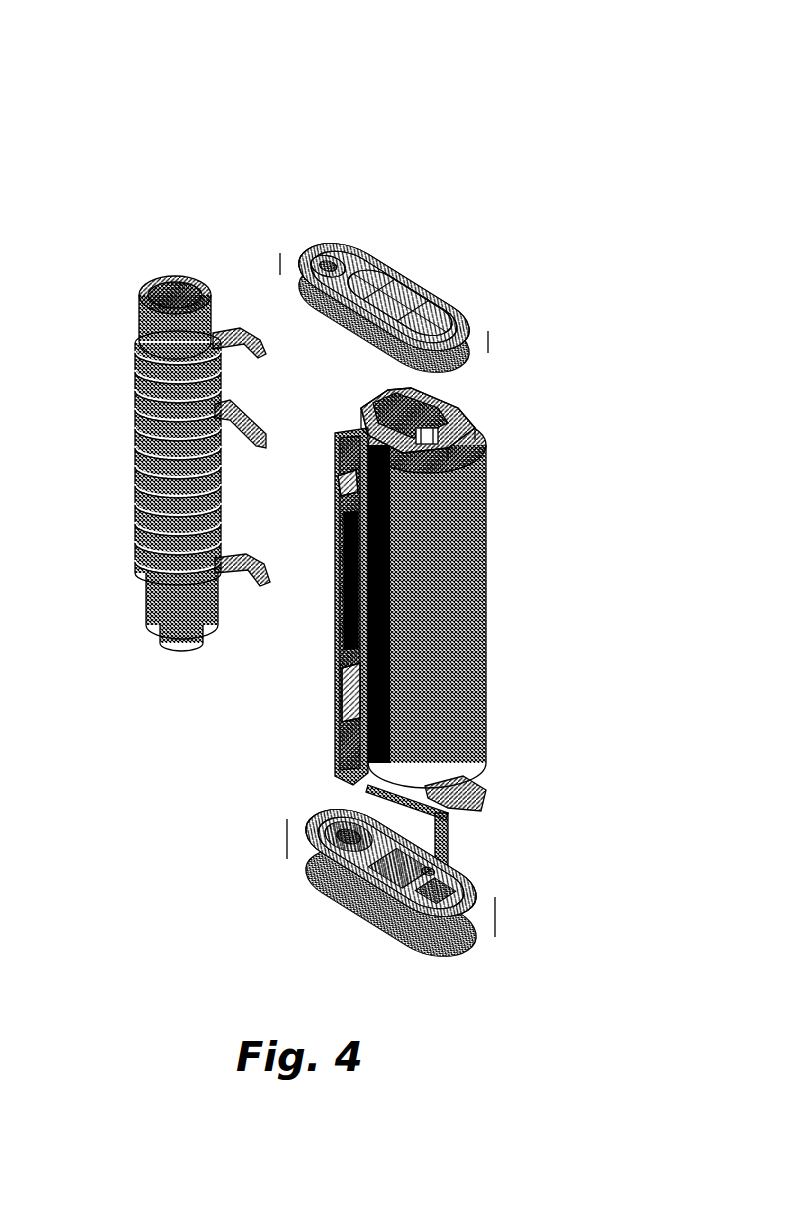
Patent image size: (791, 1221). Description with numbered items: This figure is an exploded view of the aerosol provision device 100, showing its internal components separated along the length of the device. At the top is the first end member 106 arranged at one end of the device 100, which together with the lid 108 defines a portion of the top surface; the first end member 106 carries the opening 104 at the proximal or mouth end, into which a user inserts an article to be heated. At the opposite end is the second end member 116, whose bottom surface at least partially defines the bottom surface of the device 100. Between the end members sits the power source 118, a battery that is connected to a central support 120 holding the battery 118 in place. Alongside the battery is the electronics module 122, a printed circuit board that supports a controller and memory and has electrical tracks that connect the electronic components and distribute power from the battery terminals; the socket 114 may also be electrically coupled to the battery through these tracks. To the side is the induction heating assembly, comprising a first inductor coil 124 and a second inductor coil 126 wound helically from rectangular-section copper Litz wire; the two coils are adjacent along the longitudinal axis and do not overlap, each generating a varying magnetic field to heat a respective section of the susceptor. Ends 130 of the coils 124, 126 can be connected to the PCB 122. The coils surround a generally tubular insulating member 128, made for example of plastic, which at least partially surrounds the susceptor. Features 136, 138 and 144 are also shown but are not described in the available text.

The aerosol provision device 100 is at (395, 80).
The opening 104 is at (314, 262).
The first end member 106 is at (392, 296).
The lid 108 is at (398, 285).
The socket 114 is at (470, 790).
The second end member 116 is at (305, 893).
The power source 118 is at (412, 588).
The central support 120 is at (348, 682).
The electronics module 122 is at (333, 614).
The first inductor coil 124 is at (198, 453).
The second inductor coil 126 is at (133, 541).
The insulating member 128 is at (136, 318).
The ends 130 is at (258, 347).
The bottom pin 136 is at (153, 628).
The latch 138 is at (333, 478).
The top rim 144 is at (138, 275).